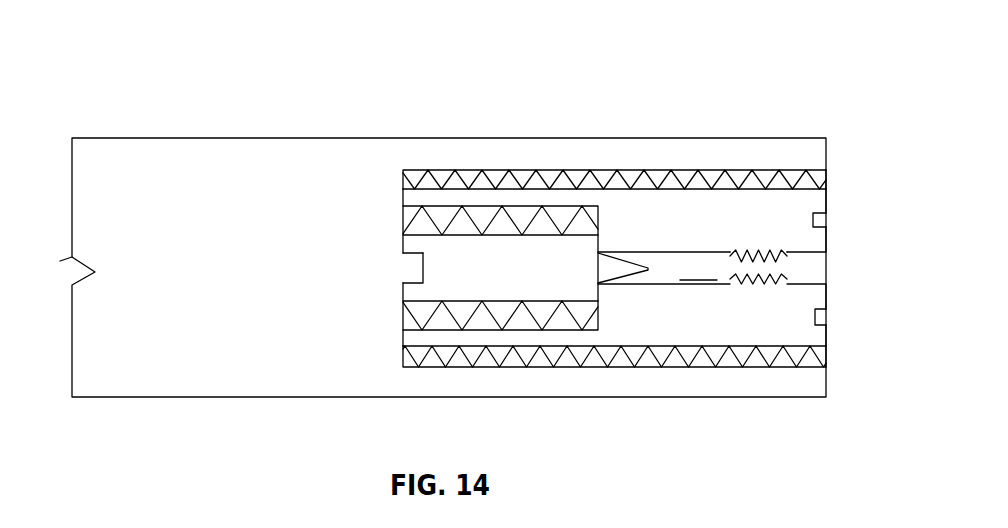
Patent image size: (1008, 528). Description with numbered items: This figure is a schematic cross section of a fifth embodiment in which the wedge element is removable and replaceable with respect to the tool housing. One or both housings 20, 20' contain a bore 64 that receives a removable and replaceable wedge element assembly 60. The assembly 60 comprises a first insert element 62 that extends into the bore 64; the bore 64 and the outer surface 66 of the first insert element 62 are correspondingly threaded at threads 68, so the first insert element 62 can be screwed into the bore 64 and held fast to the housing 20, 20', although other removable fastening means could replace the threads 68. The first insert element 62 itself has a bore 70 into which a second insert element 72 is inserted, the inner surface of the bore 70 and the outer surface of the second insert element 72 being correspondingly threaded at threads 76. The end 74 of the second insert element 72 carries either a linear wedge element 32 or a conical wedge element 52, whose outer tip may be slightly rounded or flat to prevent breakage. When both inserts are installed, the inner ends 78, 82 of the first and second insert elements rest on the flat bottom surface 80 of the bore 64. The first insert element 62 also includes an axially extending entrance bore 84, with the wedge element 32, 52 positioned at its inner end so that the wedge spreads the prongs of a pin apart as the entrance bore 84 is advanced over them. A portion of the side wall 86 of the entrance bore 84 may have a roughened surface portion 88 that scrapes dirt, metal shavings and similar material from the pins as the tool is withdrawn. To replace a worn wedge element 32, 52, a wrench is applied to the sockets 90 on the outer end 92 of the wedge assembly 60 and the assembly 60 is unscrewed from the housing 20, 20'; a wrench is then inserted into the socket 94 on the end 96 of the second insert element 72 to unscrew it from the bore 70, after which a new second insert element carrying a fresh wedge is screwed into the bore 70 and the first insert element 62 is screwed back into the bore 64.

The housing 20 is at (443, 232).
The housing 20' is at (443, 232).
The linear wedge element 32 is at (652, 239).
The conical wedge element 52 is at (652, 265).
The wedge element assembly 60 is at (832, 196).
The first insert element 62 is at (828, 246).
The bore 64 is at (750, 172).
The outer surface 66 is at (483, 182).
The threads 68 is at (613, 183).
The bore 70 is at (470, 217).
The second insert element 72 is at (403, 257).
The end 74 is at (603, 237).
The threads 76 is at (403, 302).
The inner end 78 is at (405, 197).
The flat bottom surface 80 is at (403, 340).
The inner end 82 is at (403, 240).
The entrance bore 84 is at (698, 266).
The side wall 86 is at (662, 284).
The roughened surface portion 88 is at (772, 250).
The sockets 90 is at (815, 222).
The outer end 92 is at (828, 340).
The socket 94 is at (403, 282).
The end 96 is at (405, 297).